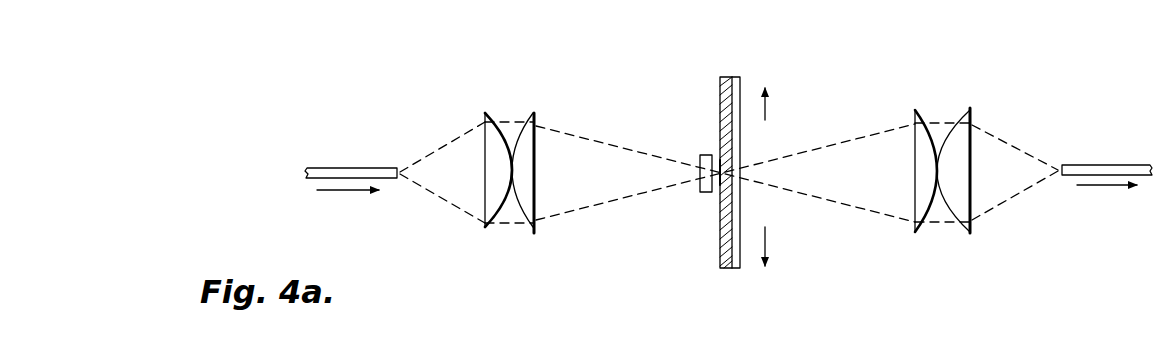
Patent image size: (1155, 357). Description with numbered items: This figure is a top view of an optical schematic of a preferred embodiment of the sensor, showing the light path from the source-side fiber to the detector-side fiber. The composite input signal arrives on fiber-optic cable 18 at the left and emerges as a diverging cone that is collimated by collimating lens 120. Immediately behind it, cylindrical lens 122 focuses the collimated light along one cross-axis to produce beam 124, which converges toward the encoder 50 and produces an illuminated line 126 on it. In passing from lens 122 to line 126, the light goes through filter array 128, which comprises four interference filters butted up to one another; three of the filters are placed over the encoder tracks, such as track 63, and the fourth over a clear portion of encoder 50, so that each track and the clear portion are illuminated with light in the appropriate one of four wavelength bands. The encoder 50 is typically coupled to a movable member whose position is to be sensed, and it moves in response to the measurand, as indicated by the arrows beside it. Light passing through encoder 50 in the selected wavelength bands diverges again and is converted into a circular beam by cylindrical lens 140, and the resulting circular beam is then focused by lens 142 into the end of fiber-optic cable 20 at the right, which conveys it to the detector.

The fiber-optic cable 18 is at (342, 168).
The fiber-optic cable 20 is at (1102, 165).
The encoder 50 is at (740, 73).
The track 63 is at (722, 77).
The collimating lens 120 is at (487, 120).
The cylindrical lens 122 is at (535, 117).
The beam 124 is at (596, 139).
The illuminated line 126 is at (718, 170).
The filter array 128 is at (690, 149).
The cylindrical lens 140 is at (918, 123).
The lens 142 is at (972, 120).